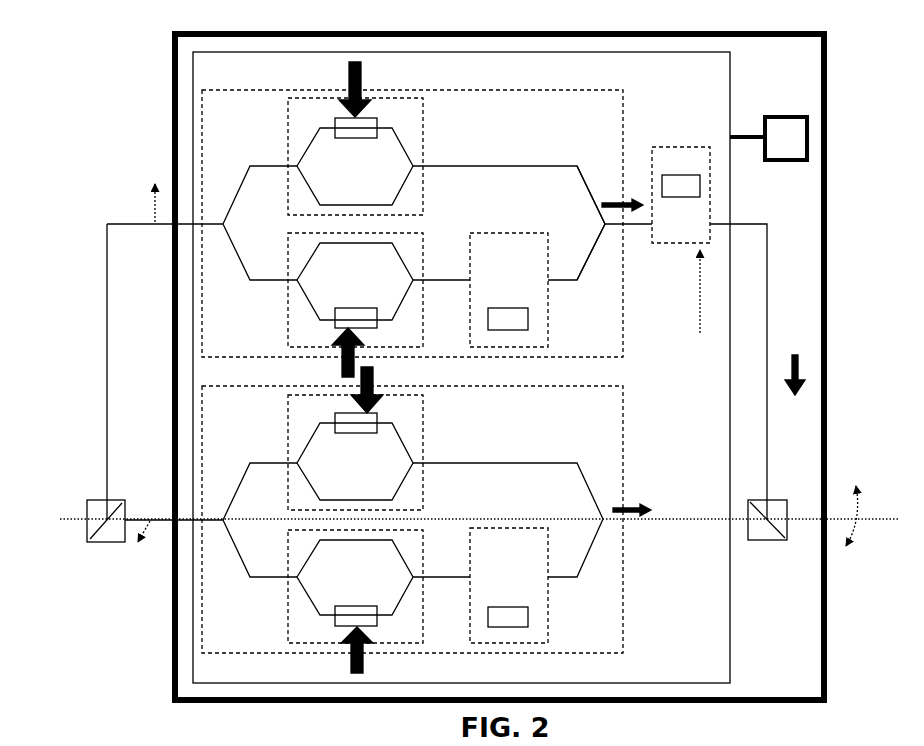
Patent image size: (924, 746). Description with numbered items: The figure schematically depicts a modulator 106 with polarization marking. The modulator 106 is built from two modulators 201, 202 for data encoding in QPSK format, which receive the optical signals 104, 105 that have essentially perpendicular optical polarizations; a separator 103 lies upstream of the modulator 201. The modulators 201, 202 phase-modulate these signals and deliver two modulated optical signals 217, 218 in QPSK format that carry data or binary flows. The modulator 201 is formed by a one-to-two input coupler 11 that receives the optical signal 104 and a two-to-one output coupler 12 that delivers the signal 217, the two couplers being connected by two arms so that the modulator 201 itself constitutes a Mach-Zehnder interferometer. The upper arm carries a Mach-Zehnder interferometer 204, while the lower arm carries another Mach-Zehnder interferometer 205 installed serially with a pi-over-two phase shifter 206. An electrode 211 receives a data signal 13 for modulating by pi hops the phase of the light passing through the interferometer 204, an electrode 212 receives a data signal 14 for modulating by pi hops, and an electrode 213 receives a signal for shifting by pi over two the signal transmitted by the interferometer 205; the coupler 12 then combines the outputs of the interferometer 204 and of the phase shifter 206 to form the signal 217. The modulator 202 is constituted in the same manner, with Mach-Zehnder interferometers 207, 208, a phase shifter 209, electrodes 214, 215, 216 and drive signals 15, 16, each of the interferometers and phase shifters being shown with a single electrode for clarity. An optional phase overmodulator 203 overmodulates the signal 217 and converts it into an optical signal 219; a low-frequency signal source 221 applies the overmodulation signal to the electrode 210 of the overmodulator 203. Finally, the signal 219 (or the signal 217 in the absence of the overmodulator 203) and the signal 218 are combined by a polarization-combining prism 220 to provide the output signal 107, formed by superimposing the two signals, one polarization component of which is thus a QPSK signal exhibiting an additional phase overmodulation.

The 1:2 input coupler 11 is at (223, 197).
The 2:1 output coupler 12 is at (602, 234).
The data signal 13 is at (345, 70).
The data signal 14 is at (338, 365).
The third electrical drive signal 15 is at (343, 673).
The fourth electrical drive signal 16 is at (374, 371).
The separator 103 is at (79, 489).
The optical signal 104 is at (147, 194).
The optical signal 105 is at (148, 546).
The modulator 106 is at (836, 651).
The signal 107 is at (868, 496).
The modulator 201 is at (628, 361).
The modulator 202 is at (628, 594).
The phase overmodulator 203 is at (683, 306).
The Mach-Zehnder interferometer 204 is at (424, 136).
The Mach-Zehnder interferometer 205 is at (424, 229).
The pi/2 phase shifter 206 is at (513, 229).
The Mach-Zehnder interferometer 207 is at (424, 432).
The Mach-Zehnder interferometer 208 is at (424, 526).
The phase shifter 209 is at (513, 526).
The electrode 210 is at (667, 169).
The electrode 211 is at (360, 141).
The electrode 212 is at (349, 306).
The electrode 213 is at (533, 322).
The third electrode 214 is at (362, 438).
The fourth electrode 215 is at (351, 603).
The second phase electrode 216 is at (533, 621).
The modulated optical signal 217 is at (612, 189).
The modulated optical signal 218 is at (644, 499).
The optical signal 219 is at (795, 352).
The polarization-combining prism 220 is at (771, 543).
The low-frequency signal source 221 is at (795, 163).